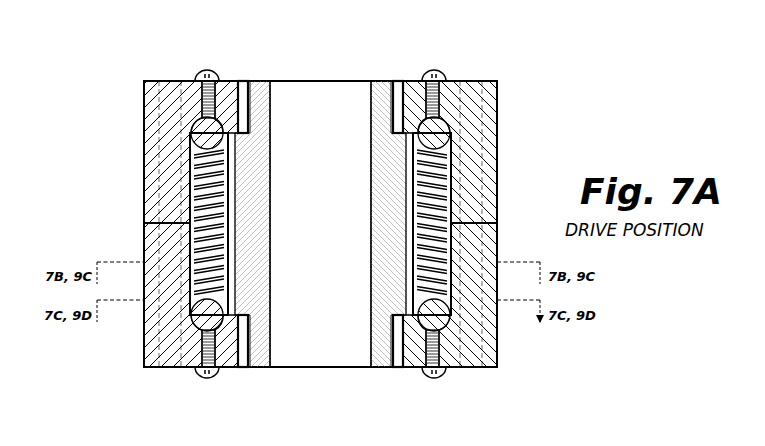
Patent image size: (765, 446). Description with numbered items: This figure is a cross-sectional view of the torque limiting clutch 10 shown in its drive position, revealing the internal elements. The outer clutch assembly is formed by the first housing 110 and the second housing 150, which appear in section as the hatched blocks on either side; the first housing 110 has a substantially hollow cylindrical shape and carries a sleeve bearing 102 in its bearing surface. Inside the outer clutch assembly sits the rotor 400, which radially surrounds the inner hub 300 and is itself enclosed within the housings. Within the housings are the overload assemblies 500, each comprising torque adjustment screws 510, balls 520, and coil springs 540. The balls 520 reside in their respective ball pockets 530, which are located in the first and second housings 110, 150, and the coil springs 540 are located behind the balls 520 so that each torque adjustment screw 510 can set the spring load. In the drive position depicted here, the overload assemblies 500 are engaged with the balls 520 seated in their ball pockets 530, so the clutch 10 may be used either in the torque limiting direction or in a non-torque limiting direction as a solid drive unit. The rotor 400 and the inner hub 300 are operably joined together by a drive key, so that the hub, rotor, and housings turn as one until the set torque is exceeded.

The torque limiting clutch 10 is at (505, 62).
The sleeve bearing 102 is at (267, 82).
The first housing 110 is at (144, 238).
The second housing 150 is at (144, 204).
The inner hub 300 is at (387, 88).
The rotor 400 is at (228, 167).
The overload assembly 500 is at (183, 157).
The torque adjustment screw 510 is at (207, 377).
The ball 520 is at (189, 136).
The ball pocket 530 is at (229, 82).
The coil spring 540 is at (189, 184).